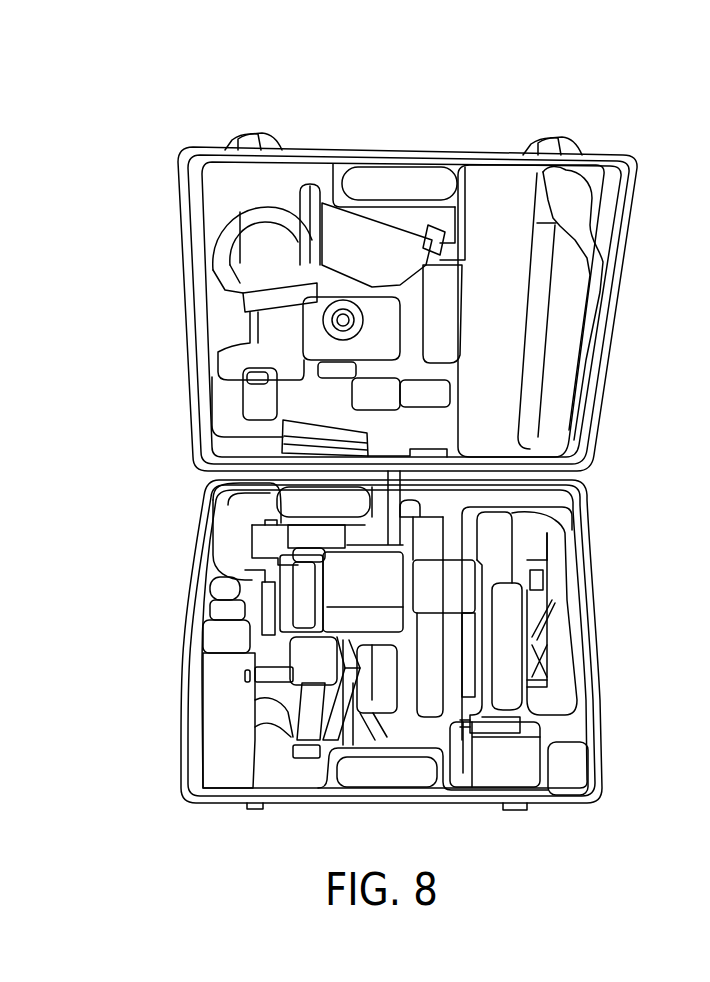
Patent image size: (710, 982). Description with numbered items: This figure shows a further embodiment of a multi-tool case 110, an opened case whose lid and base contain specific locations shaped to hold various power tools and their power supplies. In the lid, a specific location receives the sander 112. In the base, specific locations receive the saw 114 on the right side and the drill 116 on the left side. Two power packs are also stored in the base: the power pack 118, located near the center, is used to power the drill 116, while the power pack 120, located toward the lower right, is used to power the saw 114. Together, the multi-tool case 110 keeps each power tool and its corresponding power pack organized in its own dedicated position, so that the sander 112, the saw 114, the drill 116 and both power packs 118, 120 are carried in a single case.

The multi-tool case 110 is at (655, 120).
The sander 112 is at (363, 221).
The saw 114 is at (533, 525).
The drill 116 is at (217, 710).
The power pack 118 is at (390, 740).
The power pack 120 is at (503, 773).